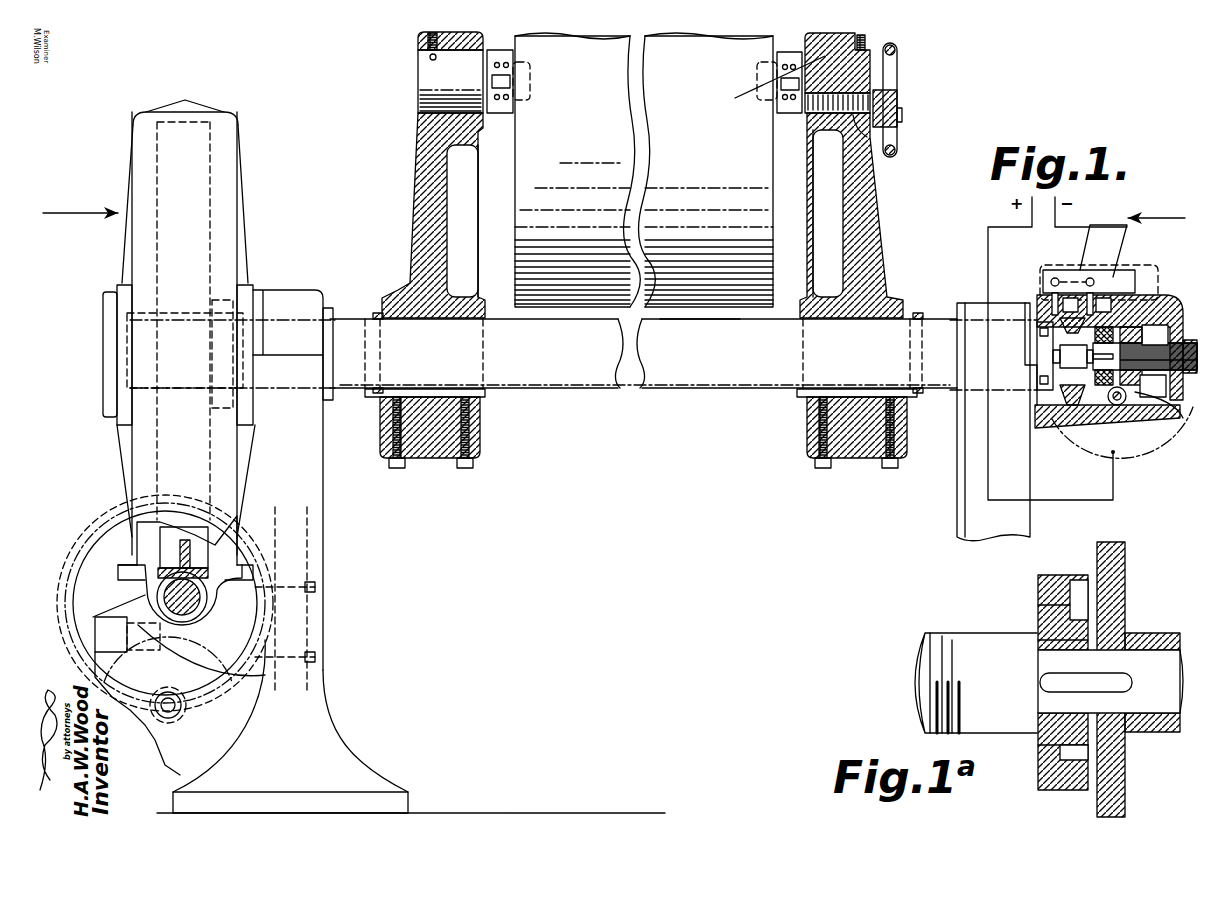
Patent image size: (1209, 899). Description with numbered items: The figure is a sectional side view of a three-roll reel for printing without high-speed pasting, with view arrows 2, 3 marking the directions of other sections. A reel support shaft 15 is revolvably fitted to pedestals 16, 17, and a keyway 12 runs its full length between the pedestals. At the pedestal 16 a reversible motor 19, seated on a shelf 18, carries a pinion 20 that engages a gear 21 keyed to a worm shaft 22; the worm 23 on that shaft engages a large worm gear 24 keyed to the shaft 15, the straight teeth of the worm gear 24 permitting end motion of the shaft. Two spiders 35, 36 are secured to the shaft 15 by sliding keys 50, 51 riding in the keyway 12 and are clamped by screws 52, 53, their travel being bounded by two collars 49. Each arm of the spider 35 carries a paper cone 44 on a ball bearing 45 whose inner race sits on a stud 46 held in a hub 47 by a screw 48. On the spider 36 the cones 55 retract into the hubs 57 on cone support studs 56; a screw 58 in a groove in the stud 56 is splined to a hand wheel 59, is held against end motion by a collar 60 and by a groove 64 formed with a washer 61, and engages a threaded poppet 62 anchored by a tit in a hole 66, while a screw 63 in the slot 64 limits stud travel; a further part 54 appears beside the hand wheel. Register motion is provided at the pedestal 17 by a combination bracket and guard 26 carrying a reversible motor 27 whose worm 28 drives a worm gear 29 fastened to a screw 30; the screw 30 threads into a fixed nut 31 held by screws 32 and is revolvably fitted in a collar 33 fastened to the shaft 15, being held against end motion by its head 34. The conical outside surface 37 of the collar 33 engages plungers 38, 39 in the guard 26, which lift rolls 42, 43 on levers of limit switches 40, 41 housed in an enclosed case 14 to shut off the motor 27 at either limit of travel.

In FIG. 1, the section line 2- 2 is at (80, 205).
In FIG. 1, the section line 3- 3 is at (1156, 213).
In FIG. 1, the keyway 12 is at (595, 390).
In FIG. 1, the enclosed case 14 is at (1147, 279).
In FIG. 1, the reel support shaft 15 is at (697, 389).
In FIG. 1, the pedestal 16 is at (324, 627).
In FIG. 1, the pedestal 17 is at (957, 509).
In FIG. 1, the shelf 18 is at (103, 617).
In FIG. 1, the reversible motor 19 is at (230, 724).
In FIG. 1, the pinion 20 is at (178, 716).
In FIG. 1, the gear 21 is at (236, 691).
In FIG. 1, the worm shaft 22 is at (185, 610).
In FIG. 1, the worm 23 is at (143, 592).
In FIG. 1, the worm gear 24 is at (168, 543).
In FIG. 1, the combination bracket and guard 26 is at (1053, 428).
In FIG. 1, the reversible motor 27 is at (1127, 462).
In FIG. 1, the worm 28 is at (1117, 406).
In FIG. 1, the worm gear 29 is at (1150, 402).
In FIG. 1, the screw 30 is at (1160, 352).
In FIG. 1, the fixed nut 31 is at (1150, 373).
In FIG. 1, the screws 32 is at (1175, 402).
In FIG. 1, the collar 33 is at (1040, 376).
In FIG. 1, the head 34 is at (1060, 355).
In FIG. 1, the spider 35 is at (417, 232).
In FIG. 1, the spider 36 is at (858, 215).
In FIG. 1, the outside surface 37 is at (1074, 430).
In FIG. 1, the plunger 38 is at (1052, 311).
In FIG. 1, the plunger 39 is at (1110, 300).
In FIG. 1, the limit switch 40 is at (1087, 278).
In FIG. 1, the limit switch 41 is at (1123, 272).
In FIG. 1, the roll 42 is at (1050, 279).
In FIG. 1, the roll 43 is at (1103, 251).
In FIG. 1, the paper cone 44 is at (505, 113).
In FIG. 1, the ball bearing 45 is at (510, 98).
In FIG. 1, the stud 46 is at (428, 80).
In FIG. 1, the hub 47 is at (418, 46).
In FIG. 1, the screw 48 is at (437, 46).
In FIG. 1, the collar 49 is at (376, 314).
In FIG. 1, the sliding key 50 is at (488, 394).
In FIG. 1, the sliding key 51 is at (806, 396).
In FIG. 1, the screw 52 is at (397, 470).
In FIG. 1, the screw 53 is at (465, 470).
In FIG. 1, the collar 54 is at (902, 118).
In FIG. 1A, the collar 54 is at (1062, 634).
In FIG. 1, the paper cone 55 is at (782, 112).
In FIG. 1, the cone support stud 56 is at (850, 68).
In FIG. 1, the hub 57 is at (866, 42).
In FIG. 1, the screw 58 is at (806, 125).
In FIG. 1A, the screw 58 is at (930, 673).
In FIG. 1, the hand wheel 59 is at (897, 150).
In FIG. 1A, the hand wheel 59 is at (1125, 620).
In FIG. 1, the collar 60 is at (898, 122).
In FIG. 1A, the collar 60 is at (1040, 780).
In FIG. 1, the washer 61 is at (872, 100).
In FIG. 1A, the washer 61 is at (1038, 624).
In FIG. 1, the screw threaded poppet 62 is at (862, 138).
In FIG. 1, the screw 63 is at (896, 52).
In FIG. 1, the groove 64 is at (773, 85).
In FIG. 1, the hole 66 is at (840, 143).